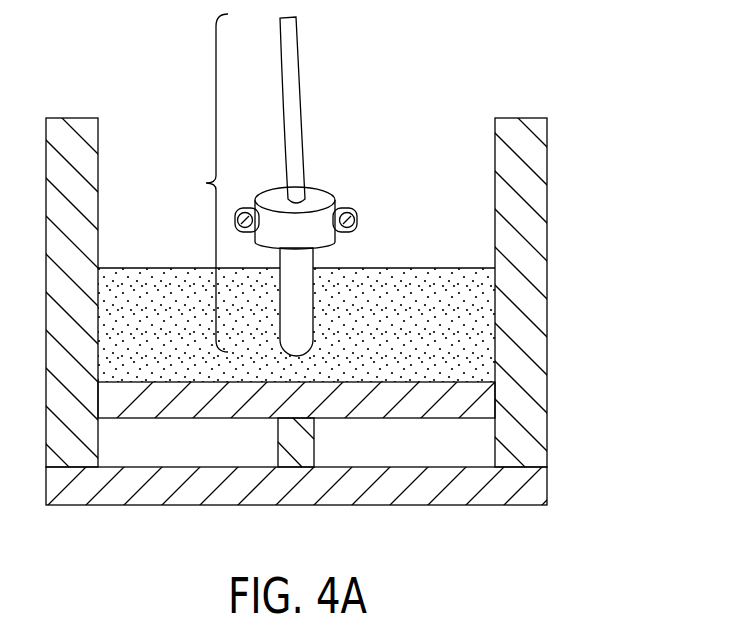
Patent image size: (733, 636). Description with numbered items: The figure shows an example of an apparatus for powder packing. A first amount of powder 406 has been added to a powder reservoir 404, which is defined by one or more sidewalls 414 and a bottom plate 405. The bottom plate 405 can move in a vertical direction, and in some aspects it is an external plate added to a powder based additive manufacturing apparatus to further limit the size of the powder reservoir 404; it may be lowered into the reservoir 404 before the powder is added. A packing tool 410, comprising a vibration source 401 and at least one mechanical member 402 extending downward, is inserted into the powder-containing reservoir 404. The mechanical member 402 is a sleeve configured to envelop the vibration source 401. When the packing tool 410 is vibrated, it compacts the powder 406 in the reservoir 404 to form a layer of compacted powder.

The vibration source 401 is at (322, 50).
The mechanical member 402 is at (315, 298).
The powder reservoir 404 is at (366, 328).
The bottom plate 405 is at (150, 419).
The powder 406 is at (148, 288).
The packing tool 410 is at (198, 183).
The sidewall 414 is at (547, 350).